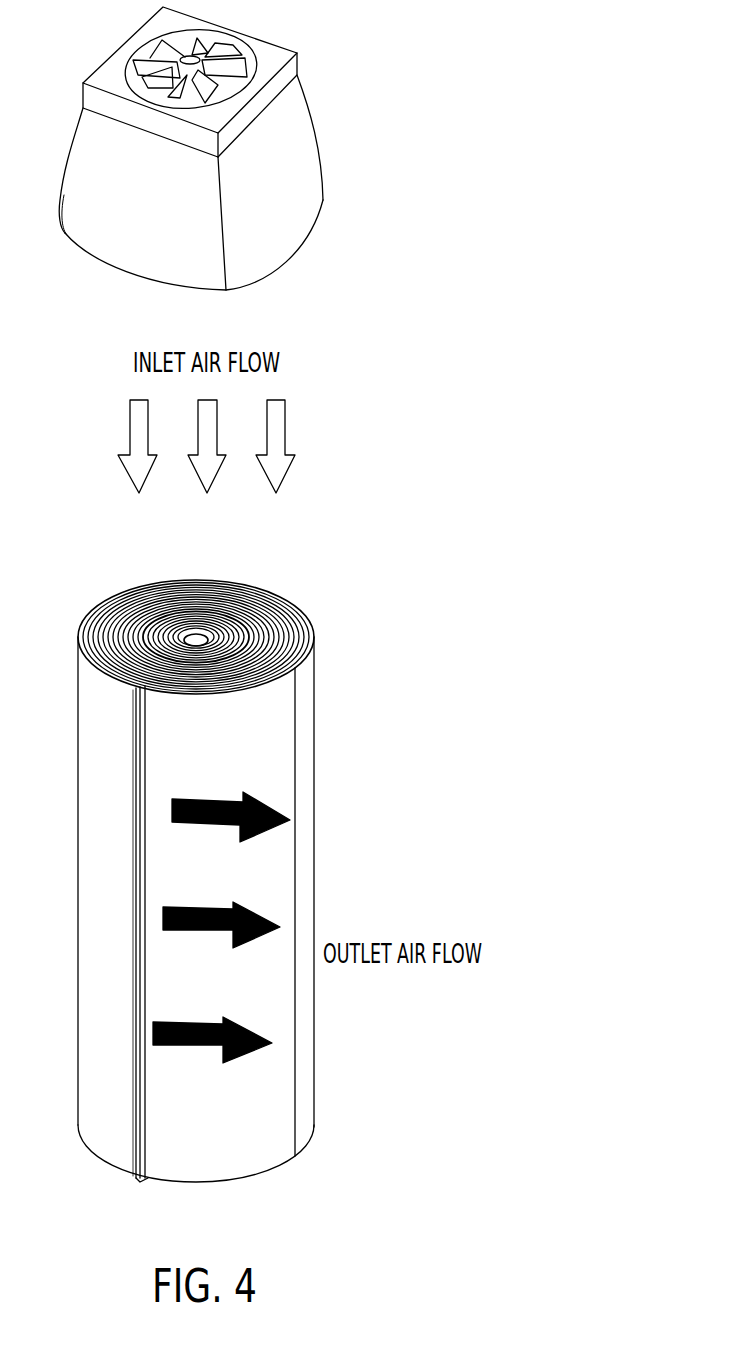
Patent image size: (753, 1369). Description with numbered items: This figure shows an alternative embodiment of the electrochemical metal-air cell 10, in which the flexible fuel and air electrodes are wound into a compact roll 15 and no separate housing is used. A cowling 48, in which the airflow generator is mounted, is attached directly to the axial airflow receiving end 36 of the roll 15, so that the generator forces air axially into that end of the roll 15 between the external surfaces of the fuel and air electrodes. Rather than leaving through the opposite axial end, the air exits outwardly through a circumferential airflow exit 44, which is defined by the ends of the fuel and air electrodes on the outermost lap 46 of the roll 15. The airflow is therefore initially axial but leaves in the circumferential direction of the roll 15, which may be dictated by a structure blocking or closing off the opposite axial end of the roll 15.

The electrochemical metal-air cell 10 is at (467, 195).
The roll 15 is at (188, 871).
The axial airflow receiving end 36 is at (108, 608).
The circumferential airflow exit 44 is at (143, 972).
The outermost lap 46 is at (115, 868).
The cowling 48 is at (303, 178).